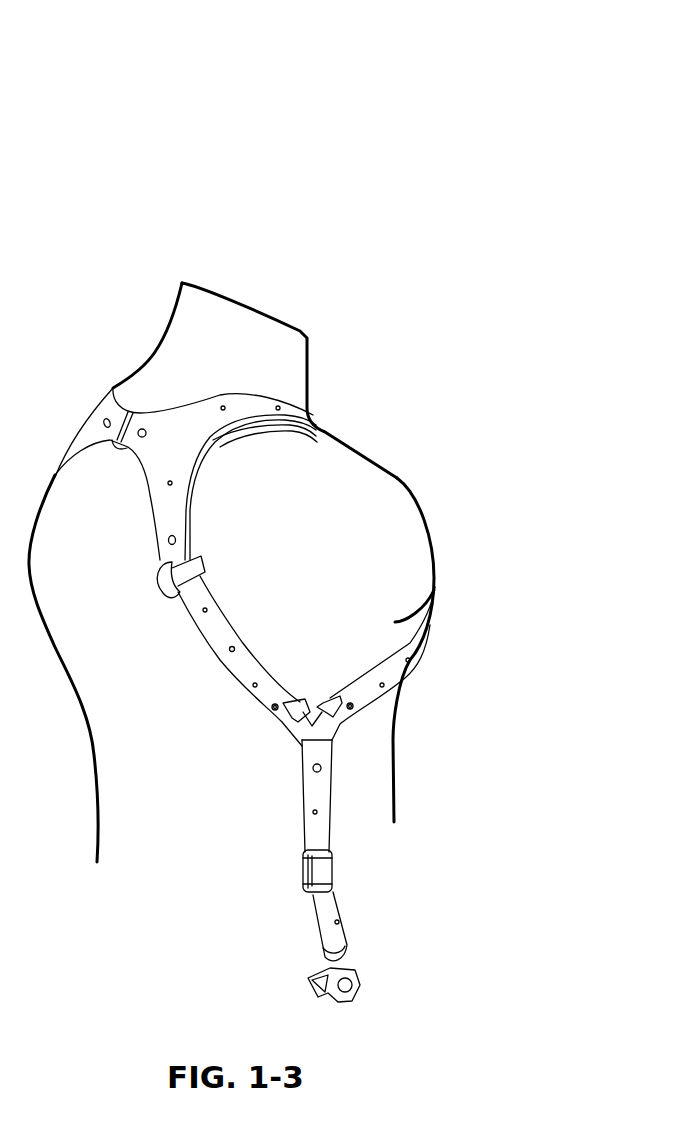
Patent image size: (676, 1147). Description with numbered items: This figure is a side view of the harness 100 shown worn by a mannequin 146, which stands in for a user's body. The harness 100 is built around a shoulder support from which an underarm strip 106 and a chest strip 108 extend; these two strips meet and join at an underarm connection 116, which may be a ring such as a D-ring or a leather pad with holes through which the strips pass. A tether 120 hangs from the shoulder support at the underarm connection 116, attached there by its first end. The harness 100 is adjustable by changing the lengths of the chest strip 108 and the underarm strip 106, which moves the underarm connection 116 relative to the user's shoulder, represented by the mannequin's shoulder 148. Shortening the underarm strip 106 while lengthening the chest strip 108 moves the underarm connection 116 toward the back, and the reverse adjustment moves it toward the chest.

The harness 100 is at (447, 142).
The mannequin 146 is at (257, 371).
The mannequin's shoulder 148 is at (363, 508).
The underarm strip 106 is at (237, 670).
The chest strip 108 is at (410, 655).
The underarm connection 116 is at (311, 727).
The tether 120 is at (320, 872).